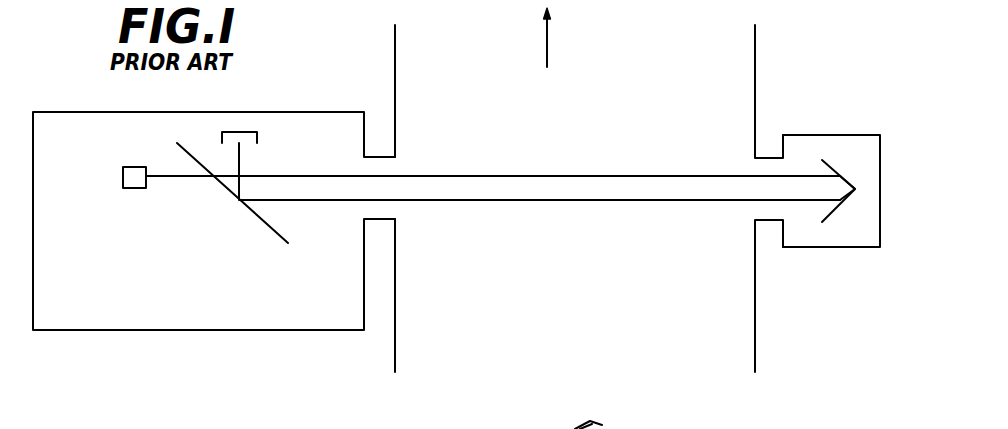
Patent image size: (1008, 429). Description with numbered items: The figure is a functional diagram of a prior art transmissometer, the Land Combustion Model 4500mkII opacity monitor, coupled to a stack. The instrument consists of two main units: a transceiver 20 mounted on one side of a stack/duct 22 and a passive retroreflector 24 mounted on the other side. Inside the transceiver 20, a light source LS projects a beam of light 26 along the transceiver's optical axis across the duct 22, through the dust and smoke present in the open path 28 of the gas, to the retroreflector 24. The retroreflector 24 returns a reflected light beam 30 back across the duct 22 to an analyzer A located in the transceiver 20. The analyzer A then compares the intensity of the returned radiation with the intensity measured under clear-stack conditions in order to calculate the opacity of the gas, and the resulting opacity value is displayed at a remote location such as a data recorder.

The transceiver 20 is at (204, 341).
The stack/duct 22 is at (756, 60).
The passive retroreflector 24 is at (847, 262).
The beam of light 26 is at (568, 175).
The open path 28 is at (547, 38).
The reflected light beam 30 is at (642, 203).
The analyzer A is at (248, 117).
The light source LS is at (131, 200).